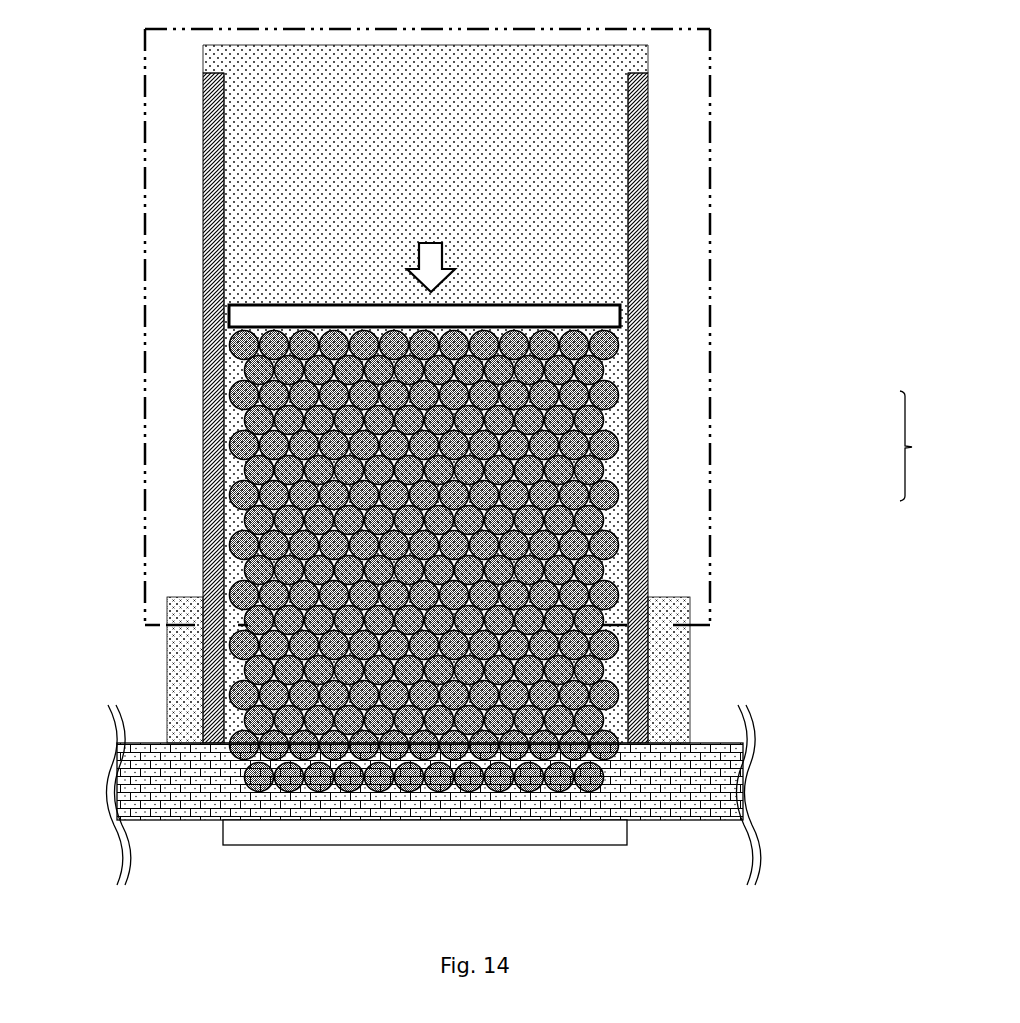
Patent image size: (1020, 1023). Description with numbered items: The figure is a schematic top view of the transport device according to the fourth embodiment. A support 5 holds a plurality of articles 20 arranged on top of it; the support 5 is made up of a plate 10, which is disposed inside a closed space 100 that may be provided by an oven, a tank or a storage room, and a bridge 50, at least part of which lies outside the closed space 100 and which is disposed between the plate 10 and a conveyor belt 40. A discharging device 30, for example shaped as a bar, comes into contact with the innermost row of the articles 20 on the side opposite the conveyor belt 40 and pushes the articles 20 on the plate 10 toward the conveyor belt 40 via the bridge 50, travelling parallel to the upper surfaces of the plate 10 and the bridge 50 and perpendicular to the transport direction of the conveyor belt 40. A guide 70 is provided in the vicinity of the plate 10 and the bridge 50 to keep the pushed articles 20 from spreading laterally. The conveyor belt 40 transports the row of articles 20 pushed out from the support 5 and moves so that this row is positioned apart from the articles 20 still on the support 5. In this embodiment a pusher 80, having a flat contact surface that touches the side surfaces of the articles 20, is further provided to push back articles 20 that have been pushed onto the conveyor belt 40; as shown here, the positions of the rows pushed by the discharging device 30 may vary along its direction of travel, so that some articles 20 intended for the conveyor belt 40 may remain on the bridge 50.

The closed space 100 is at (145, 212).
The plate 10 is at (603, 168).
The guide 70 is at (203, 393).
The articles 20 is at (612, 540).
The bridge 50 is at (690, 680).
The conveyor belt 40 is at (745, 778).
The pusher 80 is at (525, 845).
The discharging device 30 is at (640, 312).
The support 5 is at (902, 446).